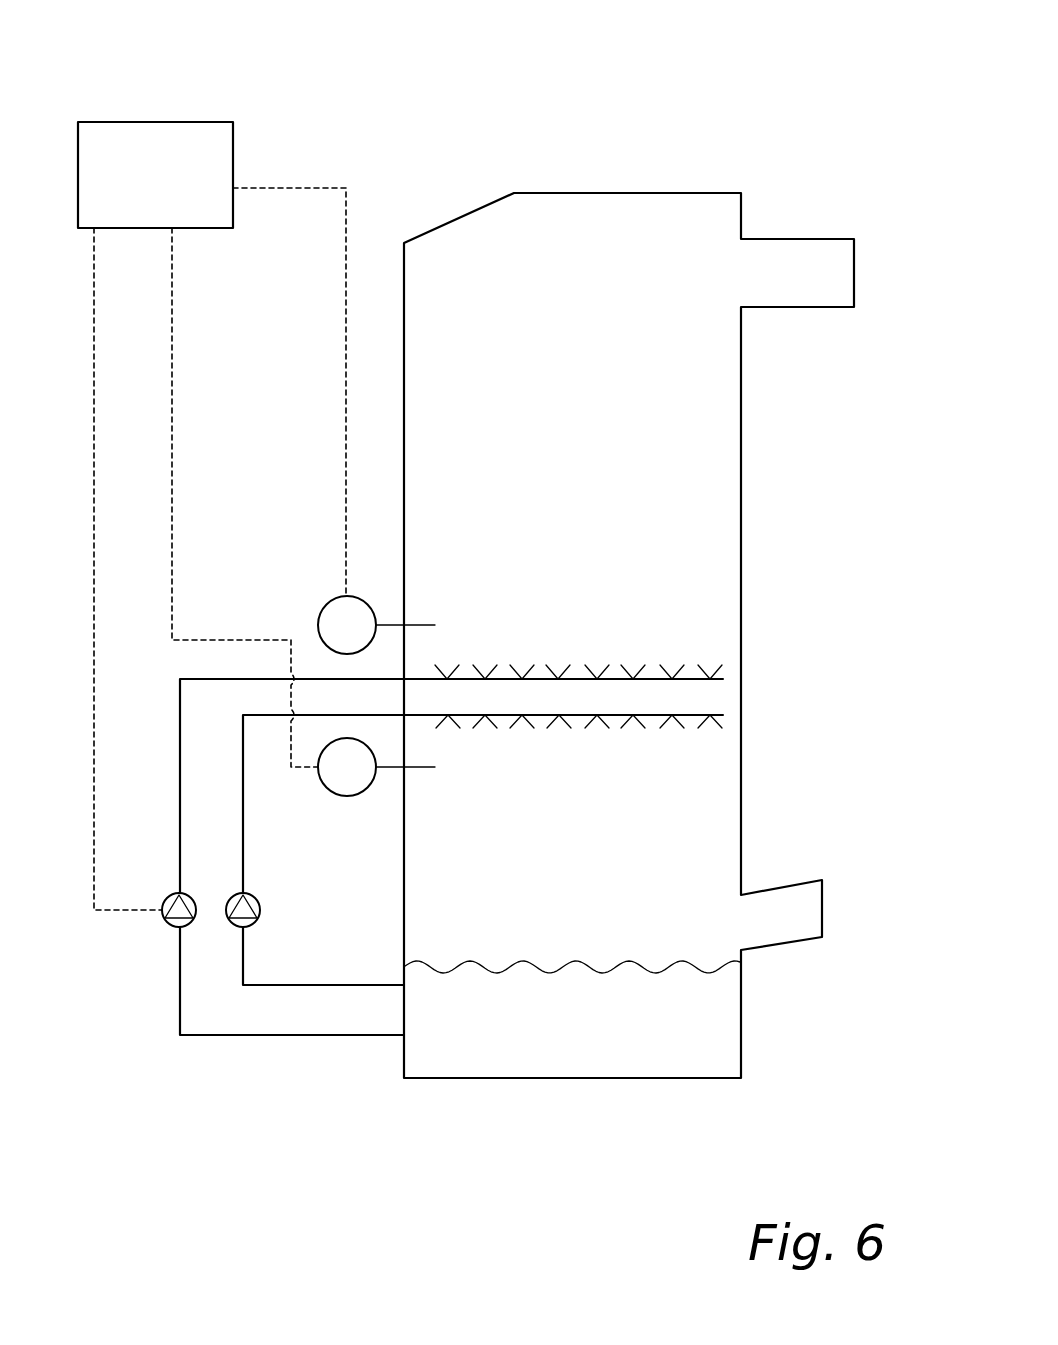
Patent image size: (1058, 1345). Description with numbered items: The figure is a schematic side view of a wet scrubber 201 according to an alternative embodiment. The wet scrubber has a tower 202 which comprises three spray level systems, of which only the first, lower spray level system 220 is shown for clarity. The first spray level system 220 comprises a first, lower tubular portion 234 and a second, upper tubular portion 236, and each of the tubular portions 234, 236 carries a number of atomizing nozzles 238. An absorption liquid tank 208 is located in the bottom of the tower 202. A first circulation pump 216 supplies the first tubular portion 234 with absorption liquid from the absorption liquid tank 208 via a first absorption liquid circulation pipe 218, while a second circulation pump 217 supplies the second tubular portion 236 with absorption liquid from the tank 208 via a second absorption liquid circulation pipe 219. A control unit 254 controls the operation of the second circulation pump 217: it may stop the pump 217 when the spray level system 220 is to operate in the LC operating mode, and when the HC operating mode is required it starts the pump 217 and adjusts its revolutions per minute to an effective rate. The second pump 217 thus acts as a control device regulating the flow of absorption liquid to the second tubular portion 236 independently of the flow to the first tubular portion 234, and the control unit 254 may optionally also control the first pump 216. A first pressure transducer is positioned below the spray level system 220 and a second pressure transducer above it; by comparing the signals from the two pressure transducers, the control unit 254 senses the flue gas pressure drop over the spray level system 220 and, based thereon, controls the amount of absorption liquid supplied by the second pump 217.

The wet scrubber 201 is at (653, 95).
The tower 202 is at (741, 810).
The absorption liquid tank 208 is at (778, 1012).
The first circulation pump 216 is at (255, 925).
The second circulation pump 217 is at (170, 928).
The first absorption liquid circulation pipe 218 is at (247, 850).
The second absorption liquid circulation pipe 219 is at (178, 822).
The first spray level system 220 is at (616, 717).
The first tubular portion 234 is at (540, 717).
The second tubular portion 236 is at (503, 678).
The atomizing nozzles 238 is at (590, 667).
The control unit 254 is at (233, 175).